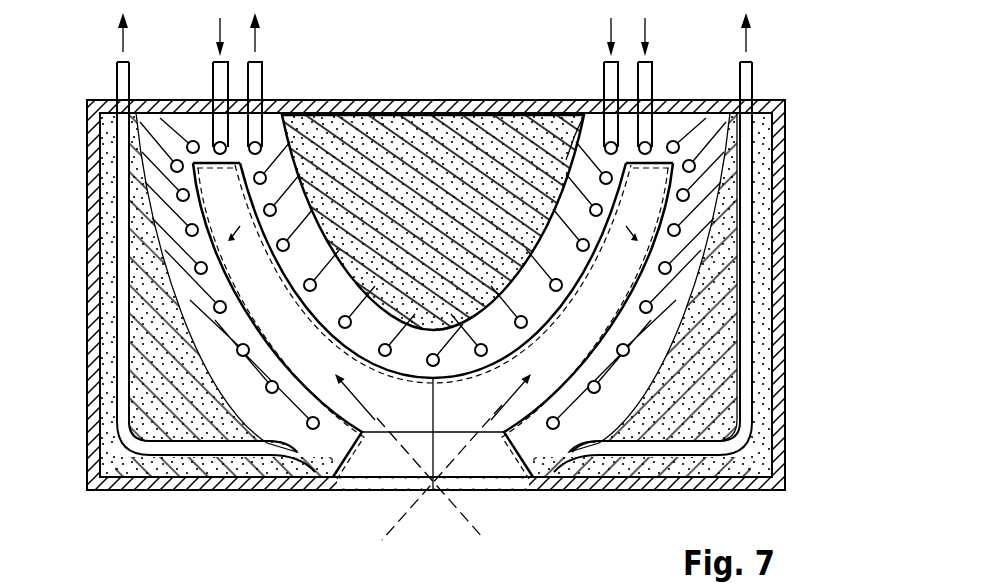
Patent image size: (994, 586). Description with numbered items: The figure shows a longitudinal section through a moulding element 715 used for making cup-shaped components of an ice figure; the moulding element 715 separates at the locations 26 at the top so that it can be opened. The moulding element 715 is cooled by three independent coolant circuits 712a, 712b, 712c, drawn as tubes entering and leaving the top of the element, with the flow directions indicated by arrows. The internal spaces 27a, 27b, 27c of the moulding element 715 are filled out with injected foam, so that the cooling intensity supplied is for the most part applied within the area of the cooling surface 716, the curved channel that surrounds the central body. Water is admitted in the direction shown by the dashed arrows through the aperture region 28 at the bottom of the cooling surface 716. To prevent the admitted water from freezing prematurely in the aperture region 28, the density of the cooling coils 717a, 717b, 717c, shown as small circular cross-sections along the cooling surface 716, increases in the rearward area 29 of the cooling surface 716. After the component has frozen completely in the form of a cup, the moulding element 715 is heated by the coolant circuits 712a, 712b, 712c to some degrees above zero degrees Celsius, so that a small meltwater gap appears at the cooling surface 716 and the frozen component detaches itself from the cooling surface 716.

The moulding element 715 is at (806, 446).
The coolant circuit 712a is at (116, 84).
The coolant circuit 712b is at (265, 88).
The coolant circuit 712c is at (755, 88).
The separation location 26 is at (230, 86).
The internal space 27a is at (200, 297).
The internal space 27b is at (297, 206).
The internal space 27c is at (657, 318).
The cooling surface 716 is at (253, 287).
The cooling coil 717a is at (240, 352).
The cooling coil 717b is at (563, 135).
The cooling coil 717c is at (680, 226).
The rearward area 29 is at (226, 206).
The aperture region 28 is at (350, 402).